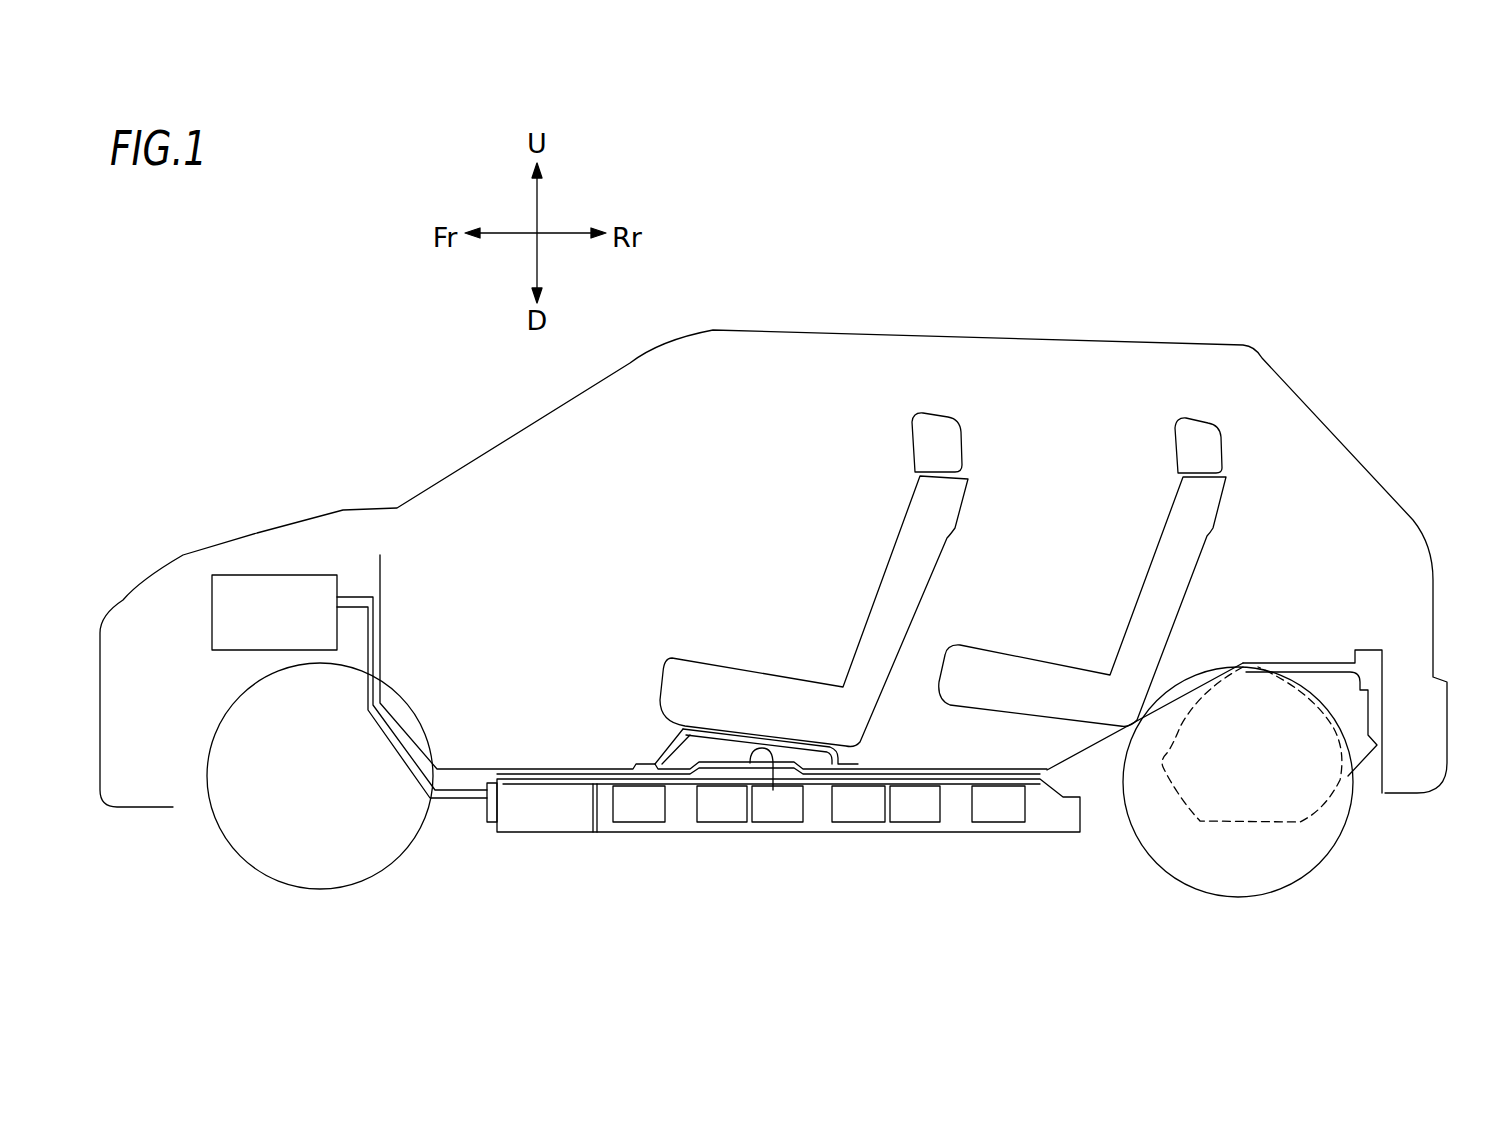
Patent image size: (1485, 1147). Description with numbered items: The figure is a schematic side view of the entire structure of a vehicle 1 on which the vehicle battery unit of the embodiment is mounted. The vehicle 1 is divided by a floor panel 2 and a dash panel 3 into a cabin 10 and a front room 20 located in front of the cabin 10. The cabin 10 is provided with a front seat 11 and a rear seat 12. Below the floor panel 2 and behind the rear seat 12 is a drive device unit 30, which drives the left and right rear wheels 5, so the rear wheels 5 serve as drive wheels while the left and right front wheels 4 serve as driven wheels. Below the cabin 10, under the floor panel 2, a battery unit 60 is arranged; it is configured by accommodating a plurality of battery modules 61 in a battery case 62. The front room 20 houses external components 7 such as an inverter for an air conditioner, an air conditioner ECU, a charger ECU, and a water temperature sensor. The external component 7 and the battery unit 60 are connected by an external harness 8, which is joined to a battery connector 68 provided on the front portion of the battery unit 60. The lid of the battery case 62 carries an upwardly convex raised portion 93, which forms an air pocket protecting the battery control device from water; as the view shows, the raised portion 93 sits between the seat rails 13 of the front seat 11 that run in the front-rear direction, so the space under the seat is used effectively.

The vehicle 1 is at (381, 336).
The floor panel 2 is at (497, 772).
The dash panel 3 is at (383, 599).
The front wheel 4 is at (404, 853).
The rear wheel 5 is at (1331, 847).
The external component 7 is at (263, 592).
The external harness 8 is at (378, 639).
The cabin 10 is at (749, 458).
The front seat 11 is at (893, 563).
The rear seat 12 is at (1157, 557).
The seat rail 13 is at (680, 745).
The front room 20 is at (301, 561).
The drive device unit 30 is at (1366, 763).
The battery unit 60 is at (723, 833).
The battery module 61 is at (908, 810).
The battery case 62 is at (951, 833).
The battery connector 68 is at (493, 826).
The raised portion 93 is at (773, 790).